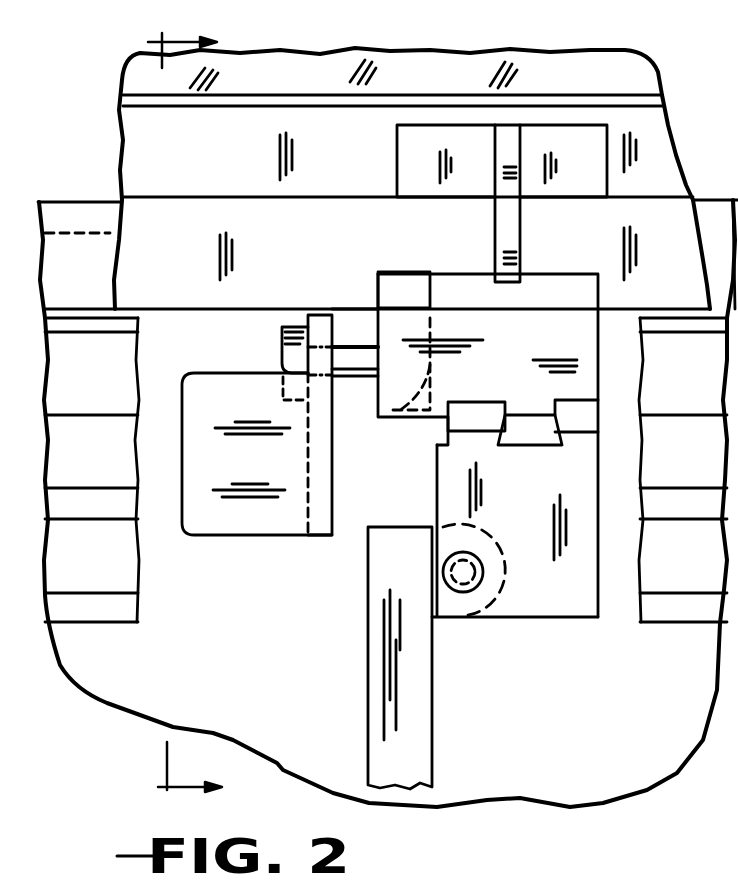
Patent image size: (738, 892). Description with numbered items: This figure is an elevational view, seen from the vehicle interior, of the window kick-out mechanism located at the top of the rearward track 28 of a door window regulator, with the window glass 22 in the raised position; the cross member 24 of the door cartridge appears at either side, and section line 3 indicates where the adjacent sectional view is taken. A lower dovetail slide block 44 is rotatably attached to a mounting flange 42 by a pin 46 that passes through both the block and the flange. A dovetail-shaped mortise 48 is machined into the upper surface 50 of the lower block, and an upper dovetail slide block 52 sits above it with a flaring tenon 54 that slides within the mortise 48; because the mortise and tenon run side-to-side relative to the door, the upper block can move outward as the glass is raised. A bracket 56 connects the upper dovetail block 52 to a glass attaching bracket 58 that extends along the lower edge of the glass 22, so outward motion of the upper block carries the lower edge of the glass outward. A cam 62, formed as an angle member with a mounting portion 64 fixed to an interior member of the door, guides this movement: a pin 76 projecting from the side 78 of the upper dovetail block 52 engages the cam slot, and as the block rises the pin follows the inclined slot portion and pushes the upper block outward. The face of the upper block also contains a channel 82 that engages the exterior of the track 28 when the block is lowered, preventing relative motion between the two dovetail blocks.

The section line 3- 3 is at (200, 416).
The window glass 22 is at (390, 49).
The cross member 24 is at (110, 624).
The rearward track 28 is at (432, 727).
The mounting flange 42 is at (523, 556).
The lower dovetail slide block 44 is at (437, 491).
The pin 46 is at (458, 592).
The mortise 48 is at (535, 446).
The upper surface 50 is at (473, 415).
The upper dovetail slide block 52 is at (560, 272).
The flaring tenon 54 is at (530, 415).
The bracket 56 is at (396, 160).
The glass attaching bracket 58 is at (663, 157).
The cam 62 is at (270, 538).
The mounting portion 64 is at (207, 505).
The pin 76 is at (353, 345).
The side 78 is at (377, 287).
The channel 82 is at (398, 285).